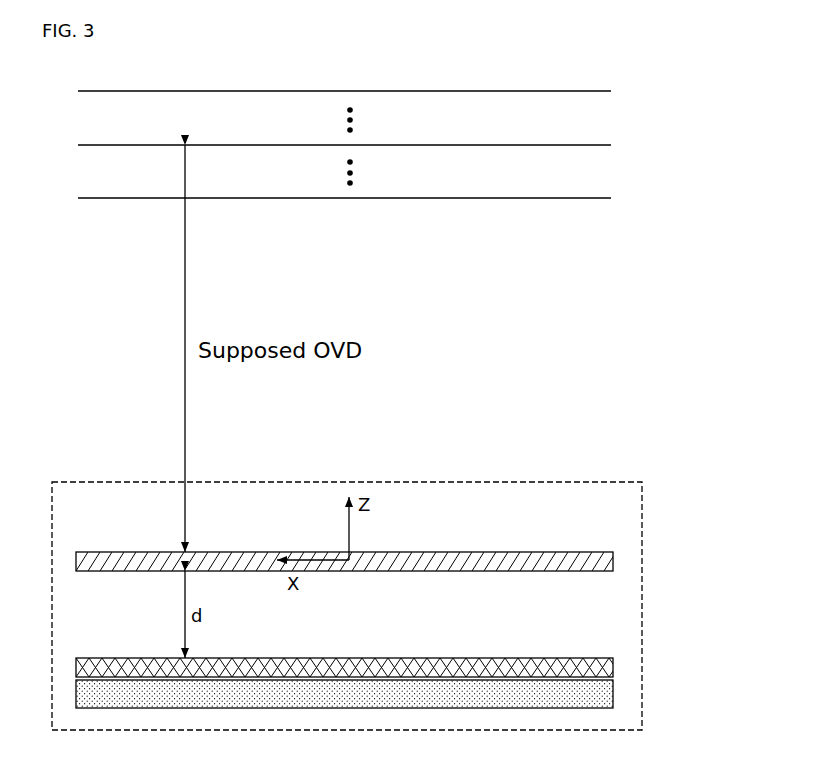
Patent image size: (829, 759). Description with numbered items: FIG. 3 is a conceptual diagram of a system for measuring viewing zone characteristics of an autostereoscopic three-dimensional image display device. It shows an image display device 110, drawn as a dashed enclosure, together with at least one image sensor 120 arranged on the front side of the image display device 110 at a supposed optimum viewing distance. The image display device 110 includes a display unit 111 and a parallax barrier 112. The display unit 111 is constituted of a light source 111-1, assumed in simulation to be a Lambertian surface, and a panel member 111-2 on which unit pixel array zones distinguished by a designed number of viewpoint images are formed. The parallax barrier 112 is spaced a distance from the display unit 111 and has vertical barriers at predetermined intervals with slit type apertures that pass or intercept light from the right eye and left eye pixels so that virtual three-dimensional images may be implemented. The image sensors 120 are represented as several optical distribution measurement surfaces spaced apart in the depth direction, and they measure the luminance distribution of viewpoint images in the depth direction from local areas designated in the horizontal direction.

The image sensor 120 is at (628, 75).
The image display device 110 is at (510, 482).
The parallax barrier 112 is at (613, 562).
The display unit 111 is at (433, 679).
The panel member 111-2 is at (613, 663).
The light source 111-1 is at (613, 688).